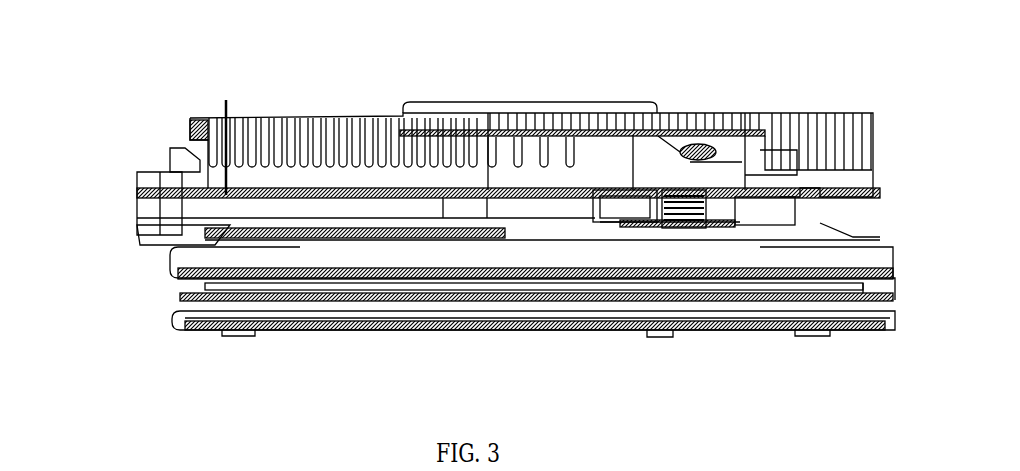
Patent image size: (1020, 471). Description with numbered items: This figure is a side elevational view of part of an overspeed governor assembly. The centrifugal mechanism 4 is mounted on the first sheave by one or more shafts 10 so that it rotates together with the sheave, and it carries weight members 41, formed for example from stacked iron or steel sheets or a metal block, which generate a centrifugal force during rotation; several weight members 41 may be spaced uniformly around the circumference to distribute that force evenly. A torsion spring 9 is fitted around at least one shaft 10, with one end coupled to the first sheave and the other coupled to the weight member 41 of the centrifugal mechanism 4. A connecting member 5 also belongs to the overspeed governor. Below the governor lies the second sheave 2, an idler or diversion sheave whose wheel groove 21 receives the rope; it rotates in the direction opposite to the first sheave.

The second sheave 2 is at (185, 311).
The centrifugal mechanism 4 is at (697, 112).
The connecting member 5 is at (519, 101).
The torsion spring 9 is at (185, 237).
The shaft 10 is at (228, 192).
The wheel groove 21 is at (205, 297).
The weight member 41 is at (178, 156).